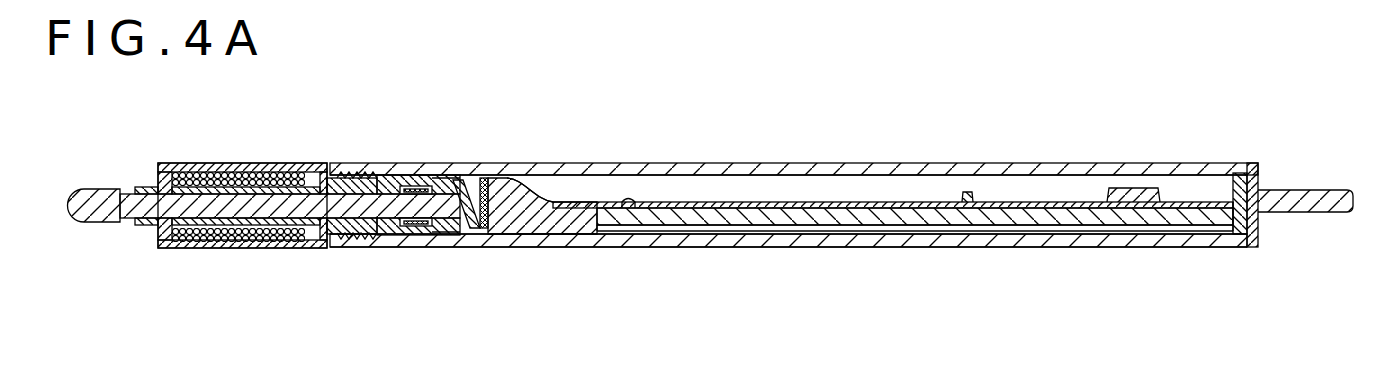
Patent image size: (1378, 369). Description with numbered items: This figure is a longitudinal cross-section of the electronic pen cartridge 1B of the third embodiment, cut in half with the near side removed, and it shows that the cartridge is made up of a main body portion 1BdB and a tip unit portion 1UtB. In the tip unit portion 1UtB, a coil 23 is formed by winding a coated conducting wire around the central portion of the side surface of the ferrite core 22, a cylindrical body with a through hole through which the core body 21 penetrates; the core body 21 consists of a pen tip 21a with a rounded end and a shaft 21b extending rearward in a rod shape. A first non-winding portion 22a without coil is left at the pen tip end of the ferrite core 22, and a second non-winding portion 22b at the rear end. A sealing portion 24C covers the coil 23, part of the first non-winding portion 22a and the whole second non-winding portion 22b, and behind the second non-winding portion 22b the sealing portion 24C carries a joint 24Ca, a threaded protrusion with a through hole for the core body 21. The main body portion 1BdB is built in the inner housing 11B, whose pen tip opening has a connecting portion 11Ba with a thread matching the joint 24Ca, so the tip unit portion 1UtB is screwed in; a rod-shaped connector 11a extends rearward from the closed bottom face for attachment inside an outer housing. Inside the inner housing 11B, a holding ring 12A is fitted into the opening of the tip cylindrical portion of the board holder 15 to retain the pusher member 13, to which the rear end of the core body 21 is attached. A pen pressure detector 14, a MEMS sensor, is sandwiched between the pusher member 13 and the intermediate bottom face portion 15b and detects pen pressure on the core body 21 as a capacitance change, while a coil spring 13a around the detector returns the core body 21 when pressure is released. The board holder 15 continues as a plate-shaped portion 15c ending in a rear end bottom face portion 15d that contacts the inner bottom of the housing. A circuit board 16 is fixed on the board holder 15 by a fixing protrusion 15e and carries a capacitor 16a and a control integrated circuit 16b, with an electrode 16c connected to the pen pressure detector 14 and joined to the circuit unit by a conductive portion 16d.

The electronic pen cartridge 1B is at (737, 100).
The tip unit portion 1UtB is at (293, 296).
The main body portion 1BdB is at (797, 296).
The inner housing 11B is at (677, 163).
The rod-shaped connector 11a is at (1305, 190).
The connecting portion 11Ba is at (340, 168).
The holding ring 12A is at (384, 178).
The pusher member 13 is at (448, 180).
The coil spring 13a is at (411, 182).
The pen pressure detector 14 is at (467, 230).
The board holder 15 is at (612, 230).
The intermediate bottom face portion 15b is at (495, 225).
The plate-shaped portion 15c is at (858, 218).
The rear end bottom face portion 15d is at (1237, 203).
The fixing protrusion 15e is at (630, 203).
The circuit board 16 is at (735, 215).
The capacitor 16a is at (967, 190).
The control integrated circuit 16b is at (1121, 188).
The electrode 16c is at (480, 195).
The conductive portion 16d is at (522, 185).
The core body 21 is at (264, 268).
The pen tip 21a is at (95, 222).
The shaft 21b is at (290, 248).
The ferrite core 22 is at (232, 219).
The first non-winding portion 22a is at (152, 186).
The second non-winding portion 22b is at (320, 163).
The coil 23 is at (250, 178).
The sealing portion 24C is at (210, 167).
The joint 24Ca is at (358, 237).